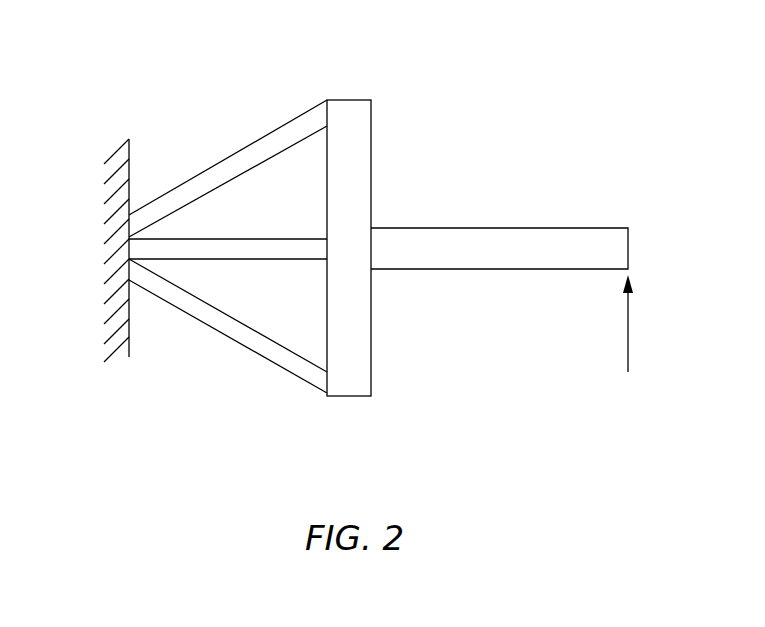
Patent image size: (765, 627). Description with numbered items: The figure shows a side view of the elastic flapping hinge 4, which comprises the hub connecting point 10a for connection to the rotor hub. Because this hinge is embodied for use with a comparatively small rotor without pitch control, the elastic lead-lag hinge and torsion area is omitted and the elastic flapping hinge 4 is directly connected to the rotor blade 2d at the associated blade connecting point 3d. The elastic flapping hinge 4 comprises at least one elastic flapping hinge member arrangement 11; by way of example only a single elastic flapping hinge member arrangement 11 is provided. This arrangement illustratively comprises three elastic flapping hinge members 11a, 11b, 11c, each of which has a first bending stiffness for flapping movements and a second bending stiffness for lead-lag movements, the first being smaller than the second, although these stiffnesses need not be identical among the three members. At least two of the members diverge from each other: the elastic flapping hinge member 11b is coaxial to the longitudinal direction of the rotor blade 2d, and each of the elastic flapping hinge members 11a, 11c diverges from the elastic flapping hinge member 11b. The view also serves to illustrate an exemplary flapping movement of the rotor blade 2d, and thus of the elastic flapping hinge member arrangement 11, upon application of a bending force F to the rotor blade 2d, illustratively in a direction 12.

The hub connecting point 10a is at (129, 121).
The elastic flapping hinge member arrangement 11 is at (228, 242).
The elastic flapping hinge member 11a is at (290, 122).
The elastic flapping hinge member 11b is at (214, 238).
The elastic flapping hinge member 11c is at (292, 372).
The elastic flapping hinge 4 is at (190, 411).
The blade connecting point 3d is at (354, 86).
The rotor blade 2d is at (504, 228).
The direction 12 is at (629, 335).